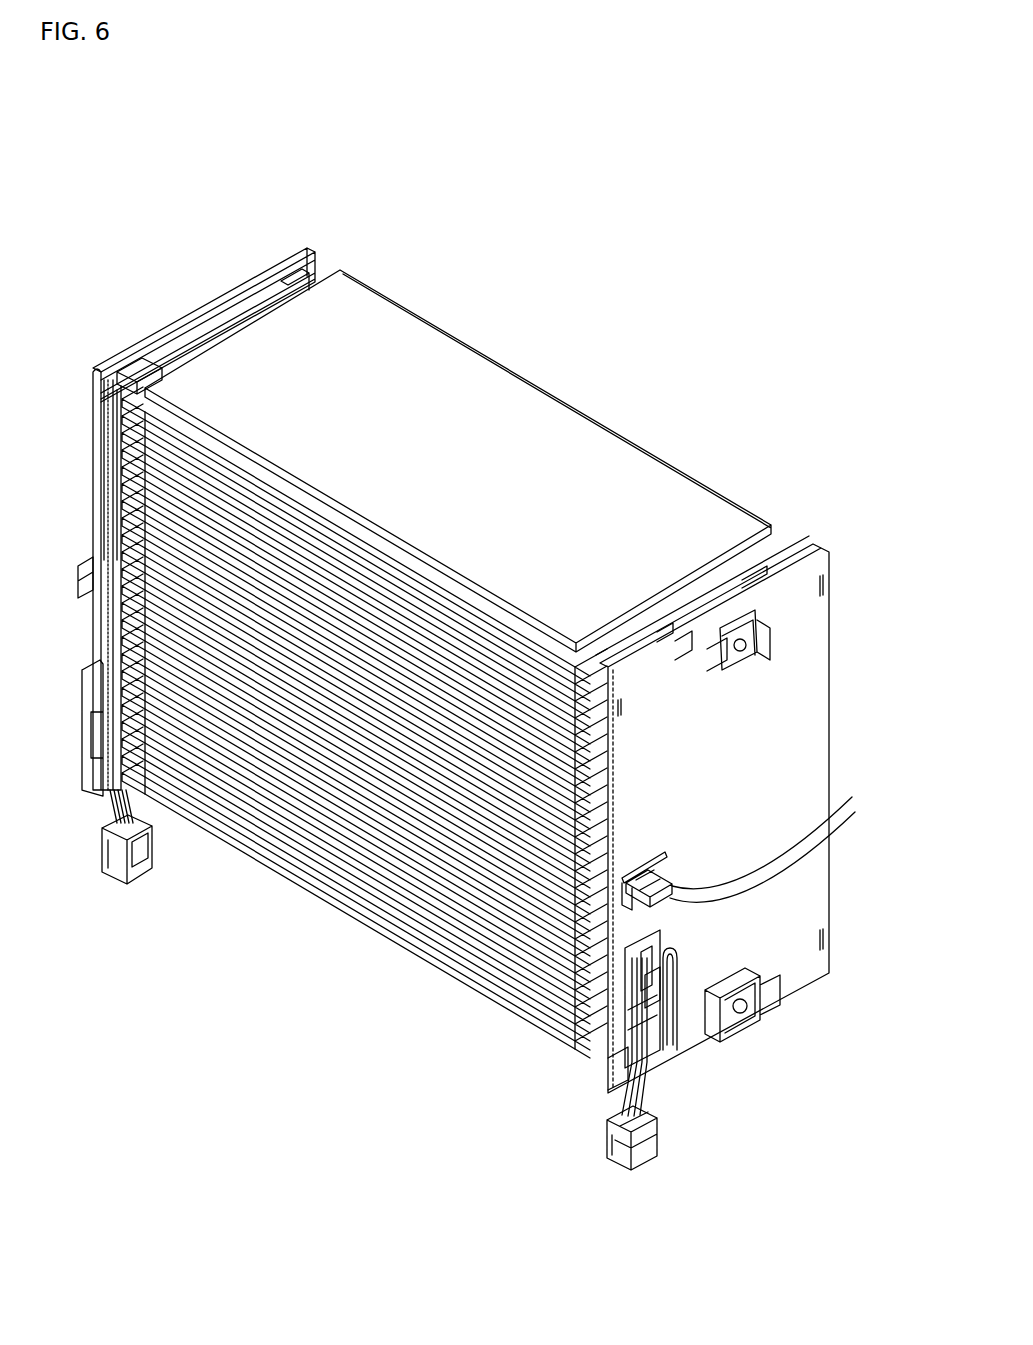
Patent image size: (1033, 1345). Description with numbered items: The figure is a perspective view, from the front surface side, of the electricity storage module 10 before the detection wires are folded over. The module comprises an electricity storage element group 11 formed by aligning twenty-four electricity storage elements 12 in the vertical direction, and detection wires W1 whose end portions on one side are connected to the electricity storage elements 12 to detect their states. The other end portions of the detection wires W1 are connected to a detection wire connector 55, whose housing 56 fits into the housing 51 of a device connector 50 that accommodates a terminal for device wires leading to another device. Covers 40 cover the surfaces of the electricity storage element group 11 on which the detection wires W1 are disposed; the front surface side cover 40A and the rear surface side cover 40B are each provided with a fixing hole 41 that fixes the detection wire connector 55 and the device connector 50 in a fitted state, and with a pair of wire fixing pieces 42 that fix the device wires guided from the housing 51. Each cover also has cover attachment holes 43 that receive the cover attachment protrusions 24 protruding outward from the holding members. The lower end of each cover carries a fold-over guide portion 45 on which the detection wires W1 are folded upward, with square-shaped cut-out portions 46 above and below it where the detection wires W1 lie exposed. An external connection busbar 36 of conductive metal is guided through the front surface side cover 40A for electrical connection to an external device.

The electricity storage module 10 is at (617, 285).
The electricity storage element group 11 is at (415, 792).
The electricity storage element 12 is at (586, 432).
The cover attachment protrusion 24 is at (108, 400).
The external connection busbar 36 is at (753, 665).
The cover 40 is at (469, 629).
The front surface side cover 40A is at (818, 557).
The rear surface side cover 40B is at (308, 248).
The fixing hole 41 is at (654, 963).
The wire fixing piece 42 is at (852, 797).
The cover attachment hole 43 is at (97, 366).
The fold-over guide portion 45 is at (624, 1070).
The cut-out portion 46 is at (657, 1063).
The device connector 50 is at (154, 864).
The housing 51 is at (138, 863).
The detection wire connector 55 is at (654, 1165).
The housing 56 is at (645, 1158).
The detection wire W1 is at (612, 1110).